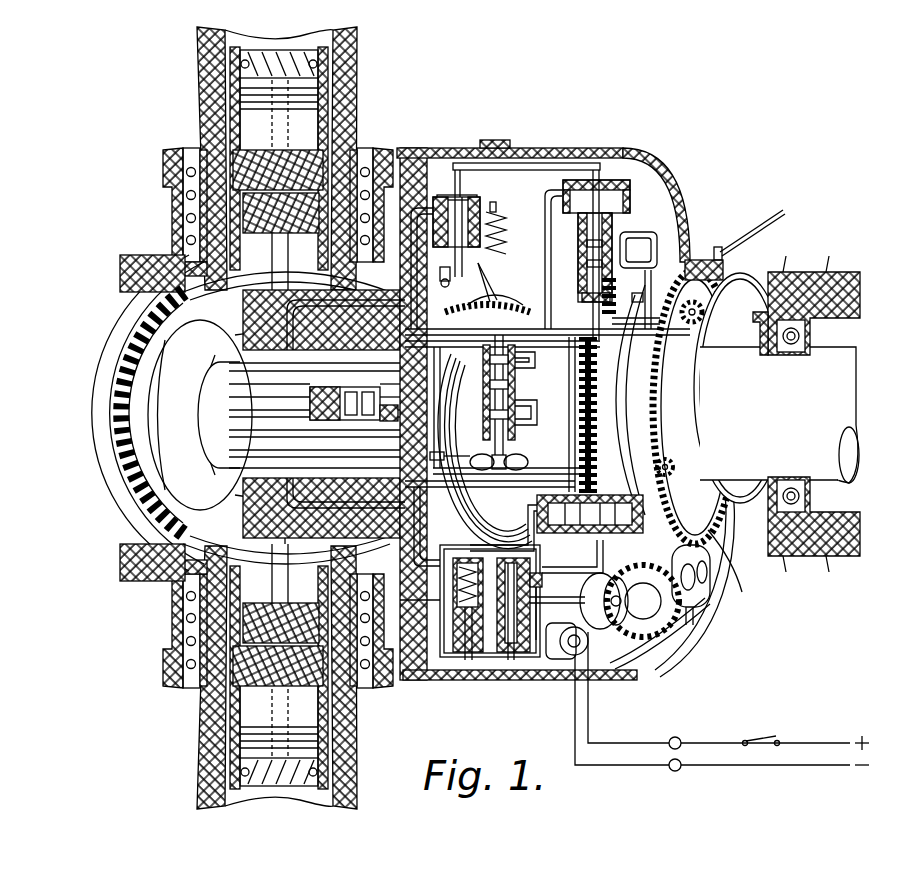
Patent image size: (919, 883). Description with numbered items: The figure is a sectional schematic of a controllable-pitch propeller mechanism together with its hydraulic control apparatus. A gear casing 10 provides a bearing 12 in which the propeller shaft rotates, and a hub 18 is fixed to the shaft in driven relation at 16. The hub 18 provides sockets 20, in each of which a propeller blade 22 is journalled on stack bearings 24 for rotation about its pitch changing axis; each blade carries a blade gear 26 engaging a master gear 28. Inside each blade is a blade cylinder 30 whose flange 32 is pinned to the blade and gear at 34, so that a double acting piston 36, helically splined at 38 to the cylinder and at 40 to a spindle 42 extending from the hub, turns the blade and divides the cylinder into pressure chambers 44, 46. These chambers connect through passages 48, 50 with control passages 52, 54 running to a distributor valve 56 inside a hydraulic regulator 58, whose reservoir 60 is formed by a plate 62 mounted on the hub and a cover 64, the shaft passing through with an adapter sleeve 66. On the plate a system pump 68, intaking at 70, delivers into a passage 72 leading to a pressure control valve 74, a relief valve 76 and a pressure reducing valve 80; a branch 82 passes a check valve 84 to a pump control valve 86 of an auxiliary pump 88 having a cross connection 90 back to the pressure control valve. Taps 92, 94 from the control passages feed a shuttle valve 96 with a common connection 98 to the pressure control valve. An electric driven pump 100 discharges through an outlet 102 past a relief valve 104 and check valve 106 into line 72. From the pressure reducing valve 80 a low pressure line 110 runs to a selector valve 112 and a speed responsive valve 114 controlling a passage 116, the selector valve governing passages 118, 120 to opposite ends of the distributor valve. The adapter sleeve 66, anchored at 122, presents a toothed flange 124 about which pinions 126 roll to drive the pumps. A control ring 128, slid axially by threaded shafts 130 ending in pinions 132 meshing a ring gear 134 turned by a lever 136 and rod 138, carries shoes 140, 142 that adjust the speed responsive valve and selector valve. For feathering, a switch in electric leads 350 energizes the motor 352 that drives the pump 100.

The gear casing 10 is at (841, 272).
The bearing 12 is at (808, 334).
The driven connection 16 is at (247, 351).
The hub 18 is at (260, 487).
The sockets 20 is at (172, 186).
The propeller blade 22 is at (348, 53).
The stack bearings 24 is at (183, 230).
The blade gear 26 is at (143, 275).
The master gear 28 is at (138, 330).
The blade cylinder 30 is at (330, 68).
The flange 32 is at (193, 258).
The pin connection 34 is at (327, 300).
The double acting piston 36 is at (250, 130).
The helical splined relation 38 is at (263, 160).
The helical splined relation 40 is at (190, 162).
The spindle 42 is at (262, 227).
The pressure chamber 44 is at (340, 205).
The pressure chamber 46 is at (243, 82).
The passage 48 is at (397, 327).
The passage 50 is at (358, 363).
The control passage 52 is at (660, 350).
The control passage 54 is at (656, 368).
The distributor valve 56 is at (655, 218).
The hydraulic regulator 58 is at (587, 141).
The reservoir 60 is at (650, 186).
The plate 62 is at (411, 153).
The cover 64 is at (643, 183).
The adapter sleeve 66 is at (692, 392).
The system pump 68 is at (627, 670).
The intake 70 is at (606, 630).
The passage 72 is at (400, 464).
The pressure control valve 74 is at (515, 658).
The relief valve 76 is at (480, 660).
The pressure reducing valve 80 is at (378, 413).
The branch 82 is at (576, 428).
The check valve 84 is at (608, 468).
The pump control valve 86 is at (577, 528).
The auxiliary pump 88 is at (703, 598).
The cross connection 90 is at (537, 541).
The tap 92 is at (645, 265).
The tap 94 is at (617, 250).
The shuttle valve 96 is at (595, 342).
The common connection 98 is at (597, 562).
The electric driven pump 100 is at (550, 663).
The outlet 102 is at (468, 655).
The relief valve 104 is at (433, 660).
The check valve 106 is at (413, 665).
The low pressure line 110 is at (395, 414).
The selector valve 112 is at (540, 400).
The speed responsive valve 114 is at (500, 238).
The passage 116 is at (437, 160).
The passage 118 is at (522, 370).
The passage 120 is at (540, 438).
The anchor 122 is at (750, 312).
The toothed flange 124 is at (605, 396).
The pinions 126 is at (660, 663).
The control ring 128 is at (492, 300).
The threaded shafts 130 is at (688, 322).
The pinions 132 is at (668, 473).
The ring gear 134 is at (717, 542).
The lever 136 is at (712, 257).
The rod 138 is at (783, 210).
The shoe 140 is at (482, 300).
The shoe 142 is at (436, 452).
The electric leads 350 is at (636, 745).
The electric motor 352 is at (578, 663).